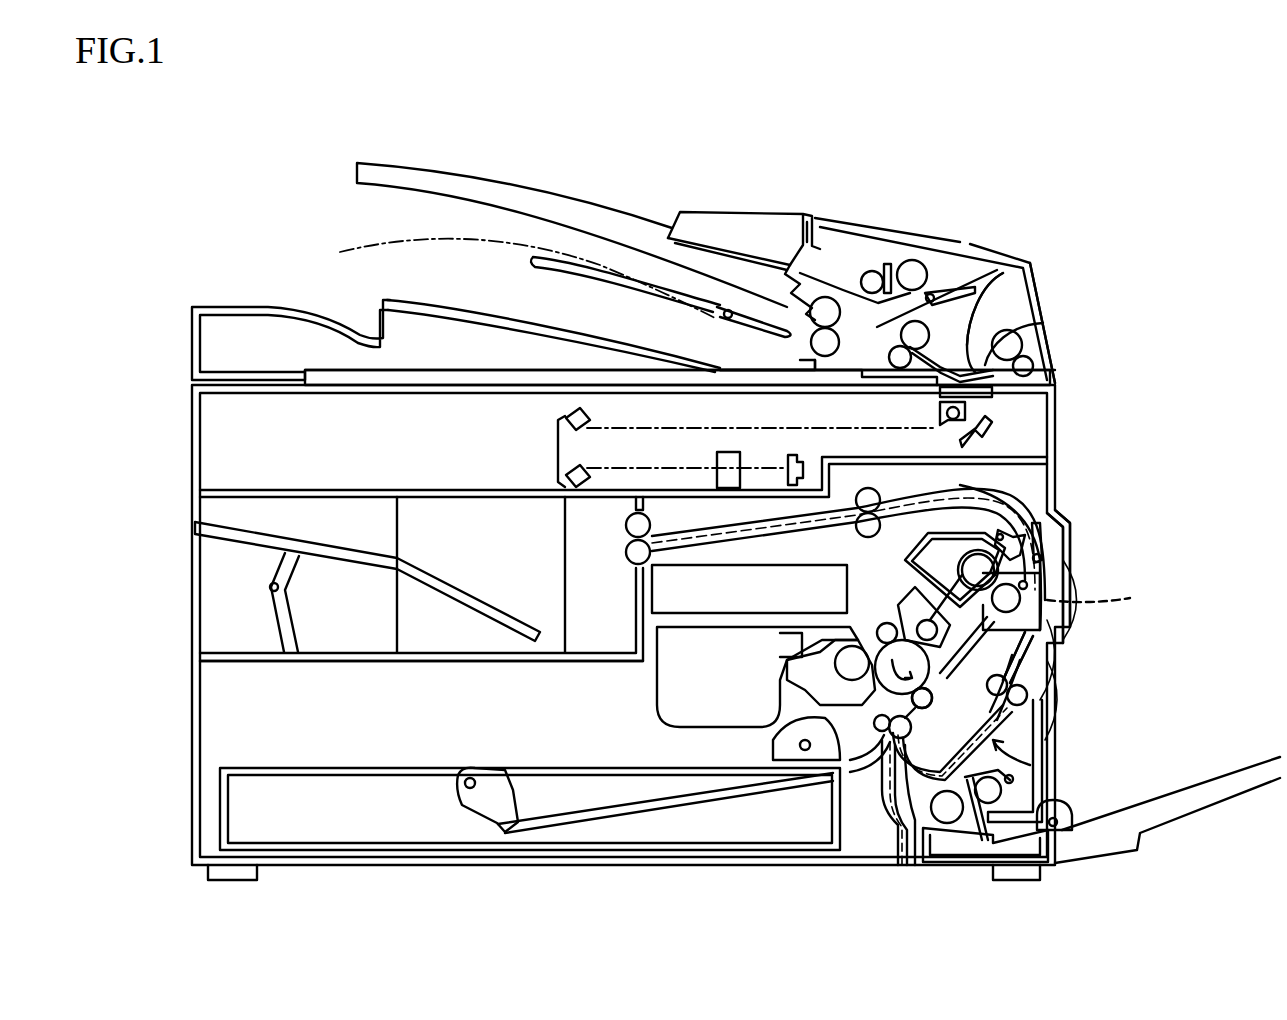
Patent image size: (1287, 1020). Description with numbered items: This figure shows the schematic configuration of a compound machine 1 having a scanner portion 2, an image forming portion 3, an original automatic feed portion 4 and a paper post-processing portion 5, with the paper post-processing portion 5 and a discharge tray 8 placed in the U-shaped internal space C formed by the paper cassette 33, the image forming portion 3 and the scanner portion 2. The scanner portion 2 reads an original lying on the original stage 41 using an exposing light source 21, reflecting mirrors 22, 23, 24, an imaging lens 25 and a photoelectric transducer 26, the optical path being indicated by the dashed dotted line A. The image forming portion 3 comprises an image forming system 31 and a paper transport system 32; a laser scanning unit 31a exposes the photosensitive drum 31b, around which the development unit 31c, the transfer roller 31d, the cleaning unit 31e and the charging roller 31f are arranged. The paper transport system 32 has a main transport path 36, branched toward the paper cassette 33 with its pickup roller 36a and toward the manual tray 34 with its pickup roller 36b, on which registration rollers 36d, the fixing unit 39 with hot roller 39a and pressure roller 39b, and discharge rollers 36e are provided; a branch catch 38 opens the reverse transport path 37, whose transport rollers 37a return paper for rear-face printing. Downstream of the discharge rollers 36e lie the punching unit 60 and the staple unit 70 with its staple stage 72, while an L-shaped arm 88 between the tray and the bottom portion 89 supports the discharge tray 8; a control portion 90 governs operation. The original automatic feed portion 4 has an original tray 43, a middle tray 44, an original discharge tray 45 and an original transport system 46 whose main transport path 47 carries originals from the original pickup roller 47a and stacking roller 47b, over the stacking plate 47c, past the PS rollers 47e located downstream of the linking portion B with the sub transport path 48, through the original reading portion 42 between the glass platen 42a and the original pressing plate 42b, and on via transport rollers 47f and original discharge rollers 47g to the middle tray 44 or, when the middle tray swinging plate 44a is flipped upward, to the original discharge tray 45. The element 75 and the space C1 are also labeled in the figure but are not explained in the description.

The compound machine 1 is at (133, 160).
The scanner portion 2 is at (1071, 437).
The image forming portion 3 is at (1079, 505).
The original automatic feed portion 4 is at (867, 204).
The paper post-processing portion 5 is at (384, 527).
The discharge tray 8 is at (228, 540).
The exposing light source 21 is at (936, 418).
The reflecting mirror 22 is at (1000, 435).
The reflecting mirror 23 is at (556, 420).
The reflecting mirror 24 is at (556, 474).
The imaging lens 25 is at (712, 462).
The photoelectric transducer 26 is at (792, 458).
The image forming system 31 is at (630, 693).
The laser scanning unit 31a is at (797, 582).
The photosensitive drum 31b is at (930, 690).
The development unit 31c is at (780, 675).
The transfer roller 31d is at (1003, 725).
The cleaning unit 31e is at (918, 605).
The charging roller 31f is at (890, 665).
The paper transport system 32 is at (1012, 760).
The paper cassette 33 is at (705, 857).
The manual tray 34 is at (1243, 760).
The main transport path 36 is at (1040, 660).
The pickup roller 36a is at (772, 740).
The pickup roller 36b is at (1075, 802).
The registration rollers 36d is at (900, 738).
The discharge rollers 36e is at (652, 520).
The reverse transport path 37 is at (1097, 650).
The transport rollers 37a is at (1040, 705).
The branch catch 38 is at (1045, 545).
The fixing unit 39 is at (960, 530).
The hot roller 39a is at (1018, 578).
The pressure roller 39b is at (1045, 630).
The original stage 41 is at (355, 386).
The original reading portion 42 is at (1062, 400).
The glass platen 42a is at (1012, 305).
The original pressing plate 42b is at (1003, 278).
The original tray 43 is at (552, 188).
The middle tray 44 is at (585, 248).
The middle tray swinging plate 44a is at (700, 318).
The original discharge tray 45 is at (500, 317).
The original transport system 46 is at (986, 263).
The main transport path 47 is at (1060, 330).
The original pickup roller 47a is at (862, 272).
The stacking roller 47b is at (912, 260).
The stacking plate 47c is at (925, 290).
The PS rollers 47e is at (1040, 360).
The transport rollers 47f is at (885, 325).
The original discharge rollers 47g is at (808, 336).
The sub transport path 48 is at (940, 320).
The punching unit 60 is at (578, 565).
The staple unit 70 is at (474, 565).
The staple stage 72 is at (427, 578).
The bottom plate 75 is at (430, 655).
The arm 88 is at (277, 608).
The bottom portion 89 is at (220, 652).
The control portion 90 is at (463, 662).
The optical path A is at (730, 425).
The linking portion B is at (843, 347).
The space C is at (272, 527).
The storage space C1 is at (328, 615).